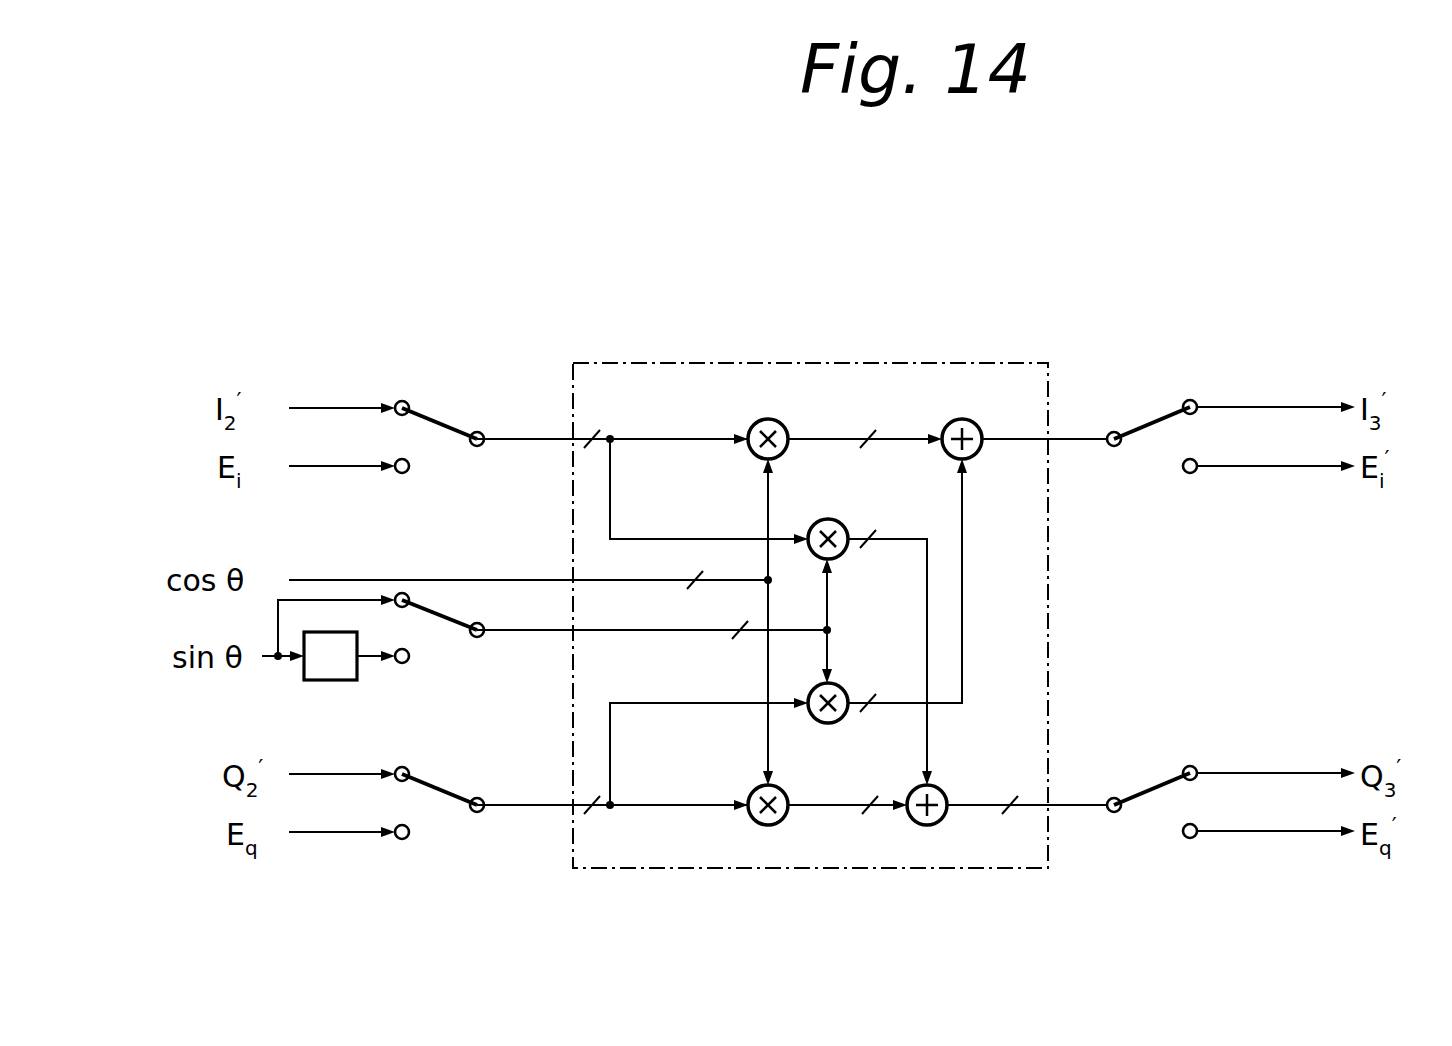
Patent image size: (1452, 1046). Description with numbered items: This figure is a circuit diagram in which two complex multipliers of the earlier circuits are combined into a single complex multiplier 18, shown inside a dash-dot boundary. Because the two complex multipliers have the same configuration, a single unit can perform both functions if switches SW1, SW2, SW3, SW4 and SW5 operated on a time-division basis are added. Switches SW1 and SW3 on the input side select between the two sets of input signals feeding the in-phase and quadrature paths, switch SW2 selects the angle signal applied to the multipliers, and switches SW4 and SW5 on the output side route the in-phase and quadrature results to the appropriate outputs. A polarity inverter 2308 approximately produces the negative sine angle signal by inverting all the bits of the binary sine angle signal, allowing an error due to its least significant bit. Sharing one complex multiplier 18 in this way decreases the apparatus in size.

The complex multiplier 18 is at (975, 318).
The polarity inverter 2308 is at (330, 681).
The switch SW1 is at (428, 423).
The switch SW2 is at (432, 612).
The switch SW3 is at (435, 790).
The switch SW4 is at (1158, 426).
The switch SW5 is at (1158, 792).